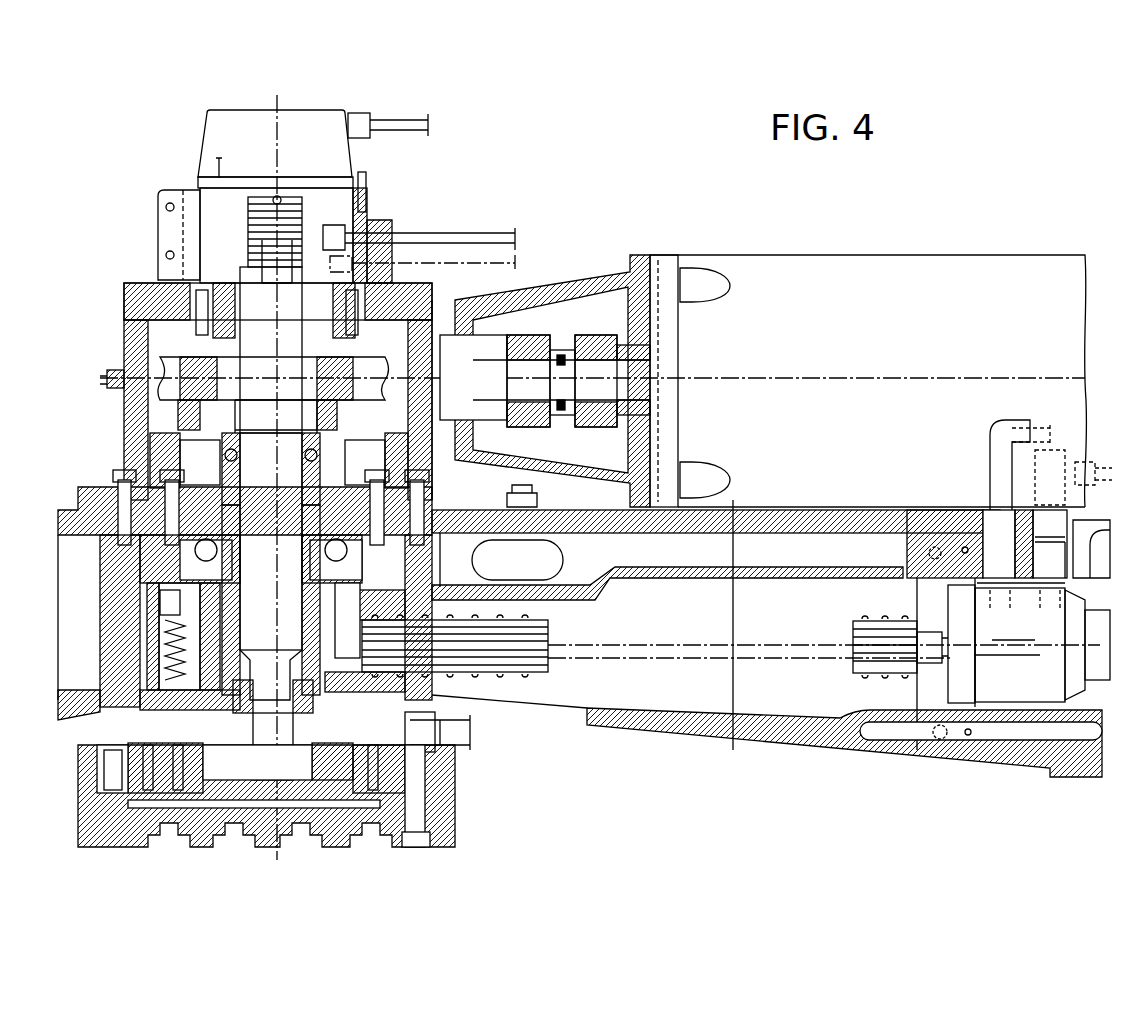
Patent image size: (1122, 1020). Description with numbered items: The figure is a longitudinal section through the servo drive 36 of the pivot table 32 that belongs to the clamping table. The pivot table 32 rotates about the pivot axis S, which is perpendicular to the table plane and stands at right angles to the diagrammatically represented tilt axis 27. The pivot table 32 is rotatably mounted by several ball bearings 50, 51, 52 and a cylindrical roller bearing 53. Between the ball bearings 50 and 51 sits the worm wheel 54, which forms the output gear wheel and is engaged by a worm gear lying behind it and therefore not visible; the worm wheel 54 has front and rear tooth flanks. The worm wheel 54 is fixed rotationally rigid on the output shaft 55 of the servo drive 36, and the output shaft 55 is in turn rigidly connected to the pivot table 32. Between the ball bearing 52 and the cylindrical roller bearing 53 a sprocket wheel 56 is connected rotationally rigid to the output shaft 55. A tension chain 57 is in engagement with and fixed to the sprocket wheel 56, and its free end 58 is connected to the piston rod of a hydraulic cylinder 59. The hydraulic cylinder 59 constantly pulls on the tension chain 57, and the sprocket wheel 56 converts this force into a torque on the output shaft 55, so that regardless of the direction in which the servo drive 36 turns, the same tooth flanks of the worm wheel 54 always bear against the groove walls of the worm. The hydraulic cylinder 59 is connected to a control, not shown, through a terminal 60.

The pivot axis S is at (277, 127).
The servo drive 36 is at (530, 222).
The ball bearing 50 is at (125, 320).
The worm wheel 54 is at (160, 365).
The ball bearing 51 is at (200, 450).
The ball bearing 52 is at (77, 507).
The output shaft 55 is at (258, 572).
The sprocket wheel 56 is at (177, 657).
The cylindrical roller bearing 53 is at (105, 697).
The pivot table 32 is at (133, 848).
The tension chain 57 is at (502, 657).
The tilt axis 27 is at (668, 660).
The free end of the tension chain 58 is at (888, 665).
The hydraulic cylinder 59 is at (1010, 670).
The terminal 60 is at (1003, 417).